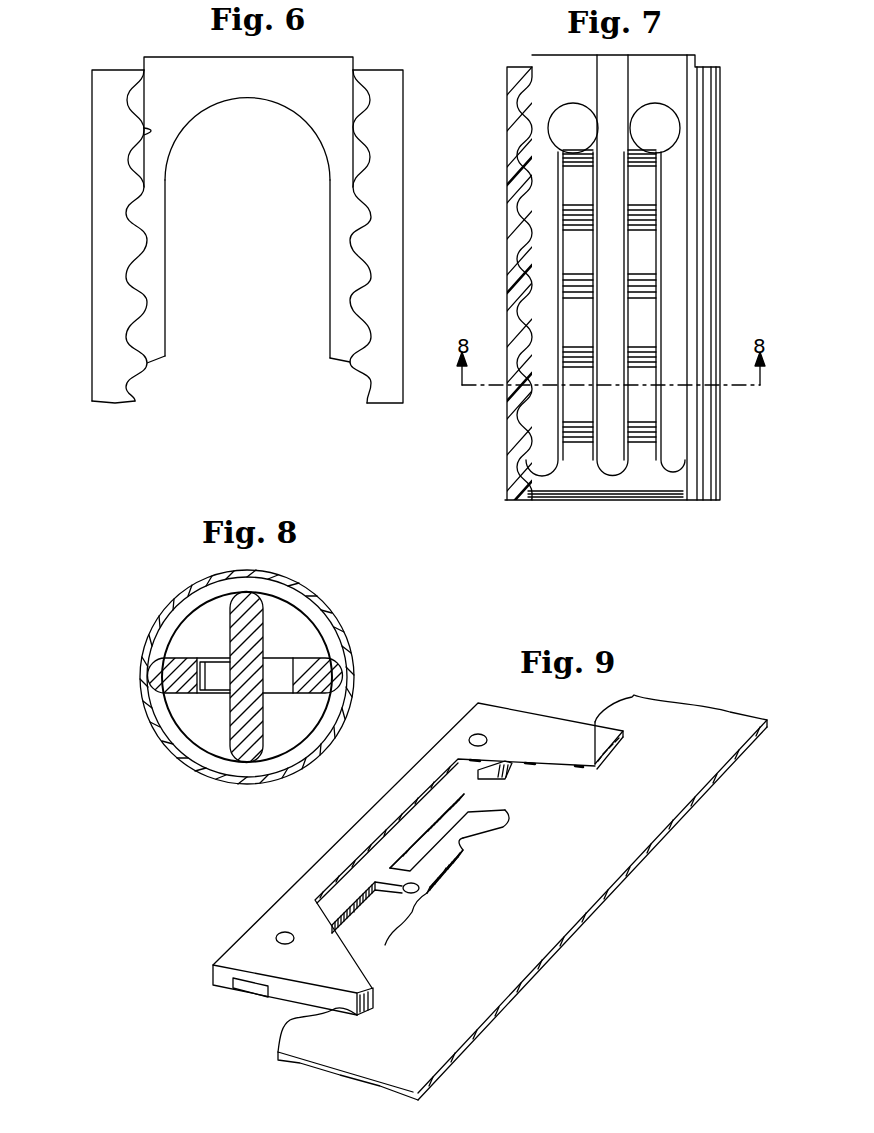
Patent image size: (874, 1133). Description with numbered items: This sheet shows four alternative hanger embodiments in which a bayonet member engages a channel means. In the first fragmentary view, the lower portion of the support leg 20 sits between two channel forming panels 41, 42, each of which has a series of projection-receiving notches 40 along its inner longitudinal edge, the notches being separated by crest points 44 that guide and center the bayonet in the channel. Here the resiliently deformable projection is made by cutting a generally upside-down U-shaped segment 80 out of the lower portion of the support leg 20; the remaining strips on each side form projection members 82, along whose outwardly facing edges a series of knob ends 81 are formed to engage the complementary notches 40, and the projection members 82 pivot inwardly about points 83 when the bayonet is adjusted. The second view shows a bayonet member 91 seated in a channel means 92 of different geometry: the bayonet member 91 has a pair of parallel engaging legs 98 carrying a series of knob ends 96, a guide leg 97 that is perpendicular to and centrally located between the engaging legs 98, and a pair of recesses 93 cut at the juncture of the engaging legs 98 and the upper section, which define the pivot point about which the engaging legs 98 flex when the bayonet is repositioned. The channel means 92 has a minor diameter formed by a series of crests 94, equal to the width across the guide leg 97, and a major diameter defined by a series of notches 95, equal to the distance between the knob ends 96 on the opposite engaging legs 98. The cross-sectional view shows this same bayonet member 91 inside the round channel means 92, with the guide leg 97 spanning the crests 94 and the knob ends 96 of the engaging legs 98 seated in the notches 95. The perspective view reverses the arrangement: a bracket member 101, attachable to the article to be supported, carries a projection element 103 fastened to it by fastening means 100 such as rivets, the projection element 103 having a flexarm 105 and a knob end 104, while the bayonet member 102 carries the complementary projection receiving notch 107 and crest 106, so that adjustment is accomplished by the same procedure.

In FIG. 6, the support leg 20 is at (183, 65).
In FIG. 6, the notches 40 is at (133, 165).
In FIG. 6, the channel forming panel 41 is at (105, 97).
In FIG. 6, the channel forming panel 42 is at (385, 93).
In FIG. 6, the crest points 44 is at (155, 132).
In FIG. 6, the U-shaped segment 80 is at (198, 228).
In FIG. 6, the knob ends 81 is at (360, 222).
In FIG. 6, the projection members 82 is at (343, 253).
In FIG. 6, the pivot points 83 is at (337, 150).
In FIG. 7, the bayonet member 91 is at (668, 68).
In FIG. 8, the bayonet member 91 is at (277, 647).
In FIG. 7, the channel means 92 is at (520, 72).
In FIG. 8, the channel means 92 is at (157, 623).
In FIG. 7, the recesses 93 is at (657, 128).
In FIG. 7, the crests 94 is at (537, 132).
In FIG. 8, the crests 94 is at (190, 598).
In FIG. 7, the notches 95 is at (522, 173).
In FIG. 8, the notches 95 is at (158, 665).
In FIG. 7, the knob ends 96 is at (520, 233).
In FIG. 8, the knob ends 96 is at (338, 667).
In FIG. 7, the guide leg 97 is at (612, 467).
In FIG. 8, the guide leg 97 is at (257, 593).
In FIG. 7, the engaging legs 98 is at (548, 457).
In FIG. 8, the engaging legs 98 is at (280, 673).
In FIG. 9, the fastening means 100 is at (470, 737).
In FIG. 9, the bracket member 101 is at (483, 715).
In FIG. 9, the bayonet member 102 is at (697, 723).
In FIG. 9, the projection element 103 is at (435, 805).
In FIG. 9, the knob end 104 is at (487, 828).
In FIG. 9, the flexarm 105 is at (442, 855).
In FIG. 9, the crest 106 is at (420, 890).
In FIG. 9, the projection receiving notch 107 is at (397, 928).